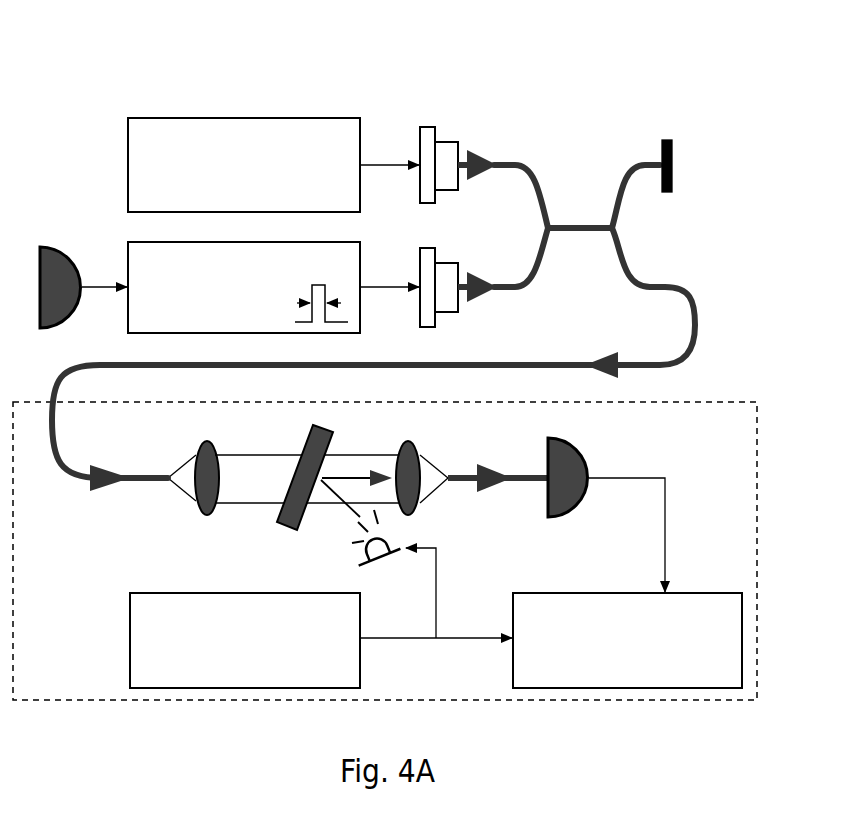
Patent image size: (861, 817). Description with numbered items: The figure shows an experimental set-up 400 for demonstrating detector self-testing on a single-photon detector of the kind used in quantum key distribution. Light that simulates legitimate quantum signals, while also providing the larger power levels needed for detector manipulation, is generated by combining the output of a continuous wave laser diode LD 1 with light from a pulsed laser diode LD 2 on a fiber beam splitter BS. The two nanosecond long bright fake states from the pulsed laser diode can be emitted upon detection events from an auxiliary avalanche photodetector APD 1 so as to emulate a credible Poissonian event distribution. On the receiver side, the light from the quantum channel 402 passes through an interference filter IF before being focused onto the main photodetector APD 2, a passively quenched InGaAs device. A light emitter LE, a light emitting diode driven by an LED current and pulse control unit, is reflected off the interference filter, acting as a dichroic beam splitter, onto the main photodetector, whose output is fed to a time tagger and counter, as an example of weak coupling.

The experimental set-up 400 is at (668, 95).
The quantum channel 402 is at (698, 308).
The avalanche photodiode APD 1 is at (69, 264).
The avalanche photodiode APD 2 is at (619, 471).